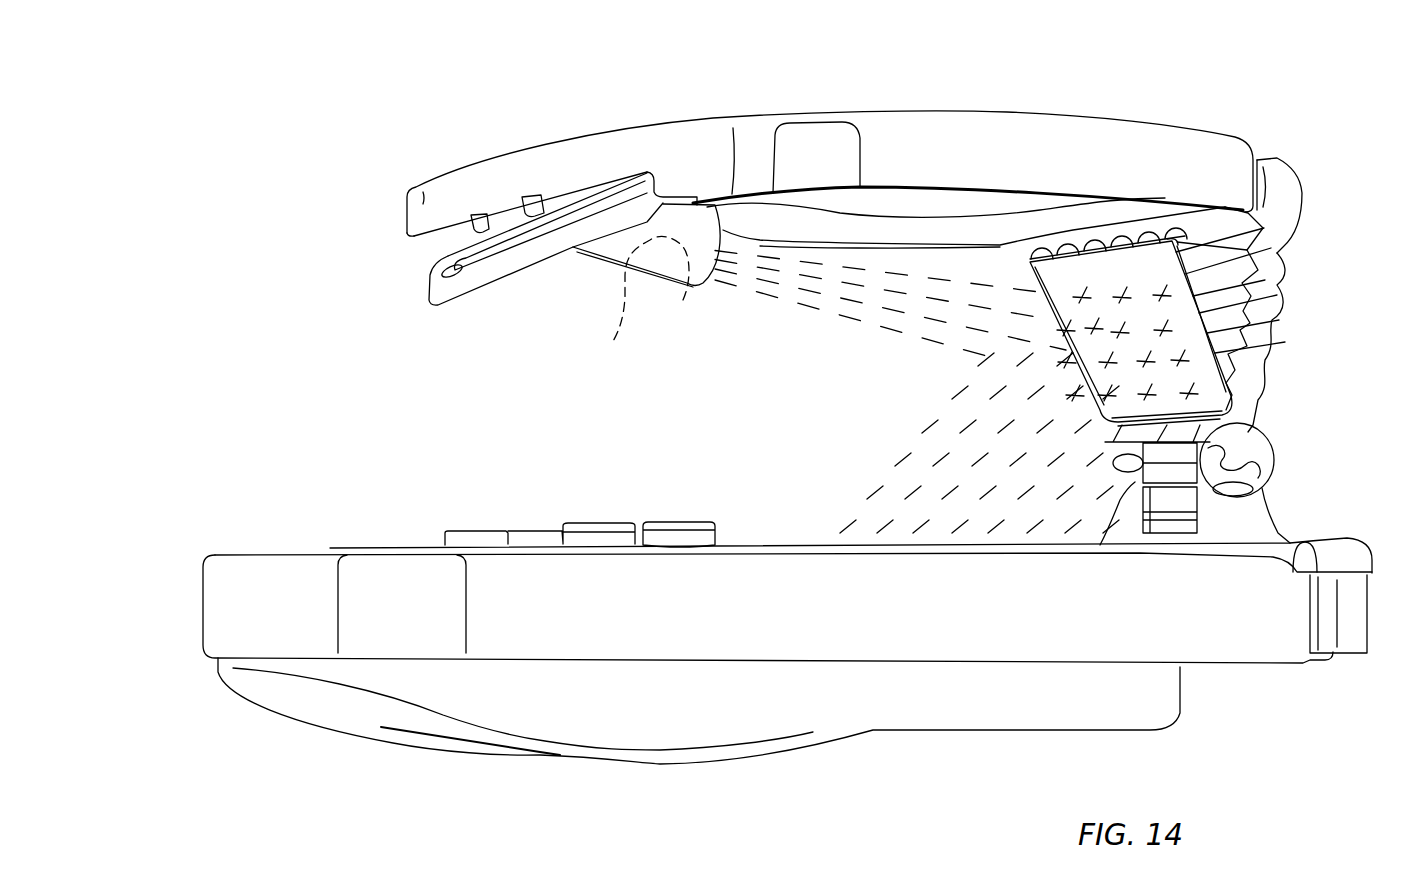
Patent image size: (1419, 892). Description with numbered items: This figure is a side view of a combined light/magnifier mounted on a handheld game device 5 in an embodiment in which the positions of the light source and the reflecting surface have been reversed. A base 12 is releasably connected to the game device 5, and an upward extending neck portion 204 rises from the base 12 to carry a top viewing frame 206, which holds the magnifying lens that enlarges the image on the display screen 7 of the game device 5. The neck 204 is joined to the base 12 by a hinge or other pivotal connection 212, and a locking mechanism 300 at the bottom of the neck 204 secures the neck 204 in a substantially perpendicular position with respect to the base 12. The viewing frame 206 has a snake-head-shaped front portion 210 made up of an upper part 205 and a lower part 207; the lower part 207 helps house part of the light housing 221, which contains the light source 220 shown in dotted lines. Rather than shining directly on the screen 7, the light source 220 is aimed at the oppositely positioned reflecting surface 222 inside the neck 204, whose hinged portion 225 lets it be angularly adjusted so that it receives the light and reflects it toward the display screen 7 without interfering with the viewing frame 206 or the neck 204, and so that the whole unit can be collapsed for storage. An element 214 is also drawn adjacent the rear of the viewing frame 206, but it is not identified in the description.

The game device 5 is at (380, 595).
The display screen 7 is at (882, 552).
The base 12 is at (1357, 605).
The neck portion 204 is at (1270, 295).
The upper part 205 is at (423, 198).
The viewing frame 206 is at (1000, 127).
The lower part 207 is at (463, 290).
The front portion 210 is at (500, 177).
The pivotal connection 212 is at (1185, 507).
The hinge end cap 214 is at (1263, 155).
The light source 220 is at (612, 343).
The light housing 221 is at (687, 250).
The reflecting surface 222 is at (1187, 338).
The hinged portion 225 is at (1207, 232).
The locking mechanism 300 is at (1275, 458).